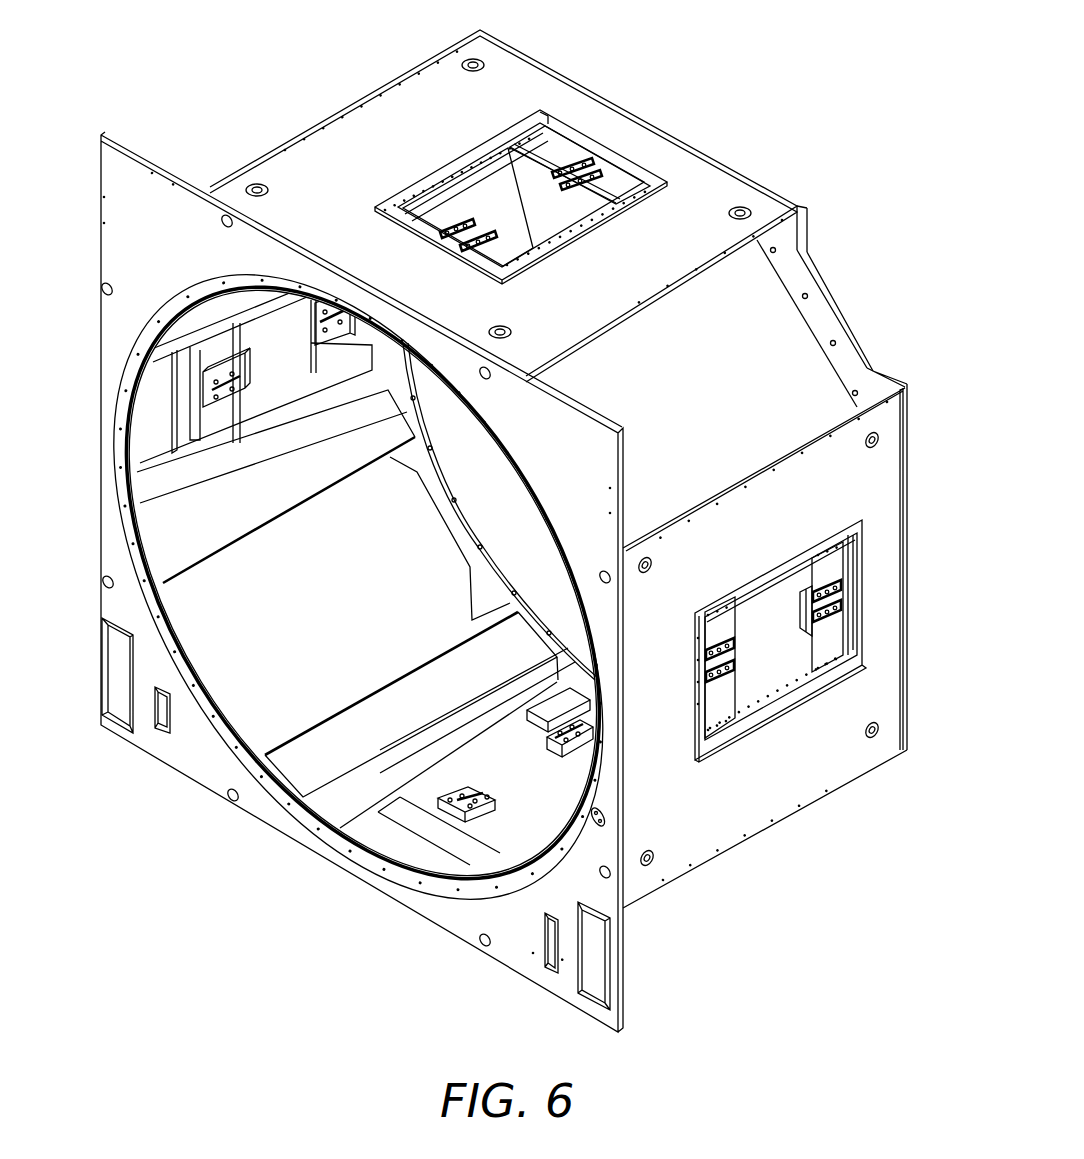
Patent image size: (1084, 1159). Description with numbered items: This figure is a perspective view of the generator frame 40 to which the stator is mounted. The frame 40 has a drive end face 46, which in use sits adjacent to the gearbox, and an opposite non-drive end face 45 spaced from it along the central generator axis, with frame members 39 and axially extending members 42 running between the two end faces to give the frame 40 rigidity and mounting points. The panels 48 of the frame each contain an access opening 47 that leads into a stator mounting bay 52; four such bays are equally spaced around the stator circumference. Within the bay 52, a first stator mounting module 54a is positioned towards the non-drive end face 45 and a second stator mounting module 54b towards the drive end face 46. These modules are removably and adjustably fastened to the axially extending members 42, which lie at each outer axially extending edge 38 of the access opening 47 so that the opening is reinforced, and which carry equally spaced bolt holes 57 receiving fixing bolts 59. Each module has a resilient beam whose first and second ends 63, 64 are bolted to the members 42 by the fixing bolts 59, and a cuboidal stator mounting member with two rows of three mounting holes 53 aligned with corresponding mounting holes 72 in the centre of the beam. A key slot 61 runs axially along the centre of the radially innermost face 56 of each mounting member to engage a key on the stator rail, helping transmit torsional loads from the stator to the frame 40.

The frame 40 is at (189, 66).
The non-drive end face 45 is at (105, 183).
The drive end face 46 is at (645, 117).
The panels 48 is at (423, 72).
The axially extending members 42 is at (170, 349).
The outer axially extending edge 38 is at (463, 155).
The frame members 39 is at (213, 525).
The access opening 47 is at (520, 122).
The stator mounting bay 52 is at (605, 218).
The mounting holes 53 is at (473, 790).
The first stator mounting module 54a is at (492, 255).
The second stator mounting module 54b is at (618, 182).
The radially innermost face 56 is at (467, 805).
The bolt holes 57 is at (457, 183).
The fixing bolt 59 is at (540, 108).
The key slot 61 is at (238, 392).
The first end 63 is at (832, 553).
The second end 64 is at (828, 650).
The mounting holes 72 is at (846, 615).